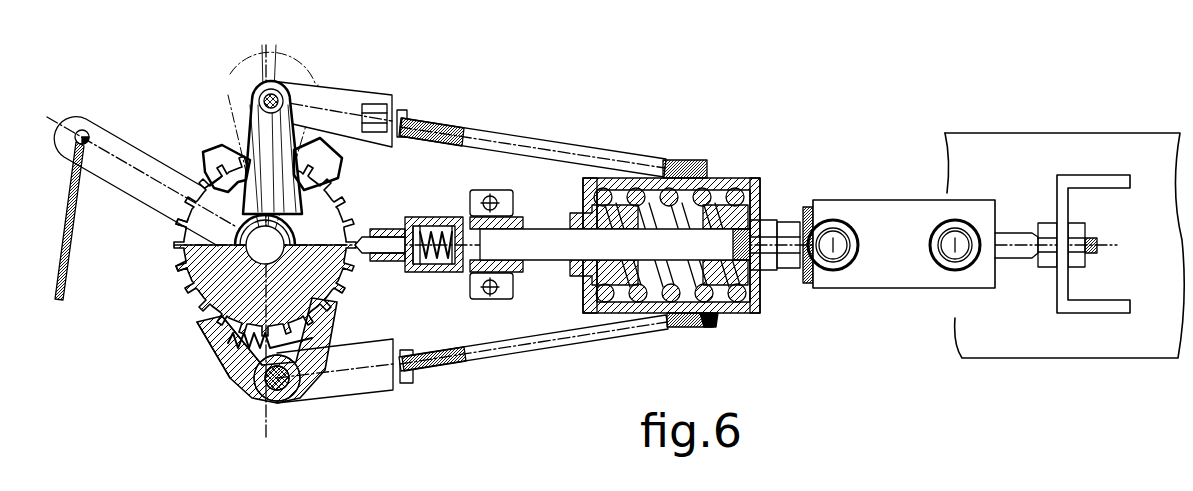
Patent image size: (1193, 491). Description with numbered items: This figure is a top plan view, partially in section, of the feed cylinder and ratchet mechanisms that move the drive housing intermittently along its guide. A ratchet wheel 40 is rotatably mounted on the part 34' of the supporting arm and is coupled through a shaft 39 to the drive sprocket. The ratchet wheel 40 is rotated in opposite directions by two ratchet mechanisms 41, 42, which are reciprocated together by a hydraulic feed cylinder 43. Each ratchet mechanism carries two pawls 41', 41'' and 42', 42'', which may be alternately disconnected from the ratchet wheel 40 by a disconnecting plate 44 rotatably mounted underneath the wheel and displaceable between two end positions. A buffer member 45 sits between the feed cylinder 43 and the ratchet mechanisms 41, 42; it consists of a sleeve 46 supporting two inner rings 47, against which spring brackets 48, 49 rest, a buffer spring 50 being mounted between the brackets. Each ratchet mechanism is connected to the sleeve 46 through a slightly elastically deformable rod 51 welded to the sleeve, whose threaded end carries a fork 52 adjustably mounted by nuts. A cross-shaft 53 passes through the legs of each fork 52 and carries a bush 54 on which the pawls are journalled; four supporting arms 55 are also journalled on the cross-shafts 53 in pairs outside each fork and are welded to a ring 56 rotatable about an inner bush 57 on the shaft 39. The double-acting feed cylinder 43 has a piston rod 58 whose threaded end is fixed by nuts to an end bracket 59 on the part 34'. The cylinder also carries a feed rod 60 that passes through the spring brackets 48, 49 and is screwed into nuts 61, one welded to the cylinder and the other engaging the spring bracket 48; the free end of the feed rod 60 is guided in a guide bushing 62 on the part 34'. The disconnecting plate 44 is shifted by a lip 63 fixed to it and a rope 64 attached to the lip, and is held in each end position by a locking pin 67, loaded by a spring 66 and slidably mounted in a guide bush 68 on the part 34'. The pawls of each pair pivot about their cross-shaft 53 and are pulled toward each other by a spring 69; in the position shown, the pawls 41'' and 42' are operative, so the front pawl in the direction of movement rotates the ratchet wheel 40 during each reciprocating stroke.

The part of the supporting arm 34' is at (1032, 223).
The shaft 39 is at (200, 280).
The ratchet wheel 40 is at (313, 220).
The ratchet mechanism 41 is at (183, 365).
The inner pawl 41' is at (199, 349).
The outer pawl 41'' is at (335, 393).
The ratchet mechanism 42 is at (218, 146).
The inner pawl 42' is at (181, 143).
The outer pawl 42'' is at (350, 165).
The hydraulic feed cylinder 43 is at (892, 277).
The disconnecting plate 44 is at (207, 303).
The buffer member 45 is at (733, 318).
The sleeve 46 is at (705, 322).
The inner rings 47 is at (597, 178).
The spring bracket 48 is at (708, 178).
The spring bracket 49 is at (620, 178).
The buffer spring 50 is at (665, 178).
The rod 51 is at (543, 138).
The fork 52 is at (370, 100).
The cross-shaft 53 is at (262, 88).
The bush 54 is at (262, 398).
The supporting arms 55 is at (253, 106).
The ring 56 is at (203, 247).
The inner bush 57 is at (197, 267).
The piston rod 58 is at (1013, 258).
The end bracket 59 is at (1095, 313).
The feed rod 60 is at (547, 258).
The nuts 61 is at (783, 273).
The guide bushing 62 is at (517, 273).
The lip 63 is at (128, 183).
The rope 64 is at (68, 288).
The spring 66 is at (437, 272).
The locking pin 67 is at (365, 253).
The guide bush 68 is at (430, 217).
The spring 69 is at (257, 357).